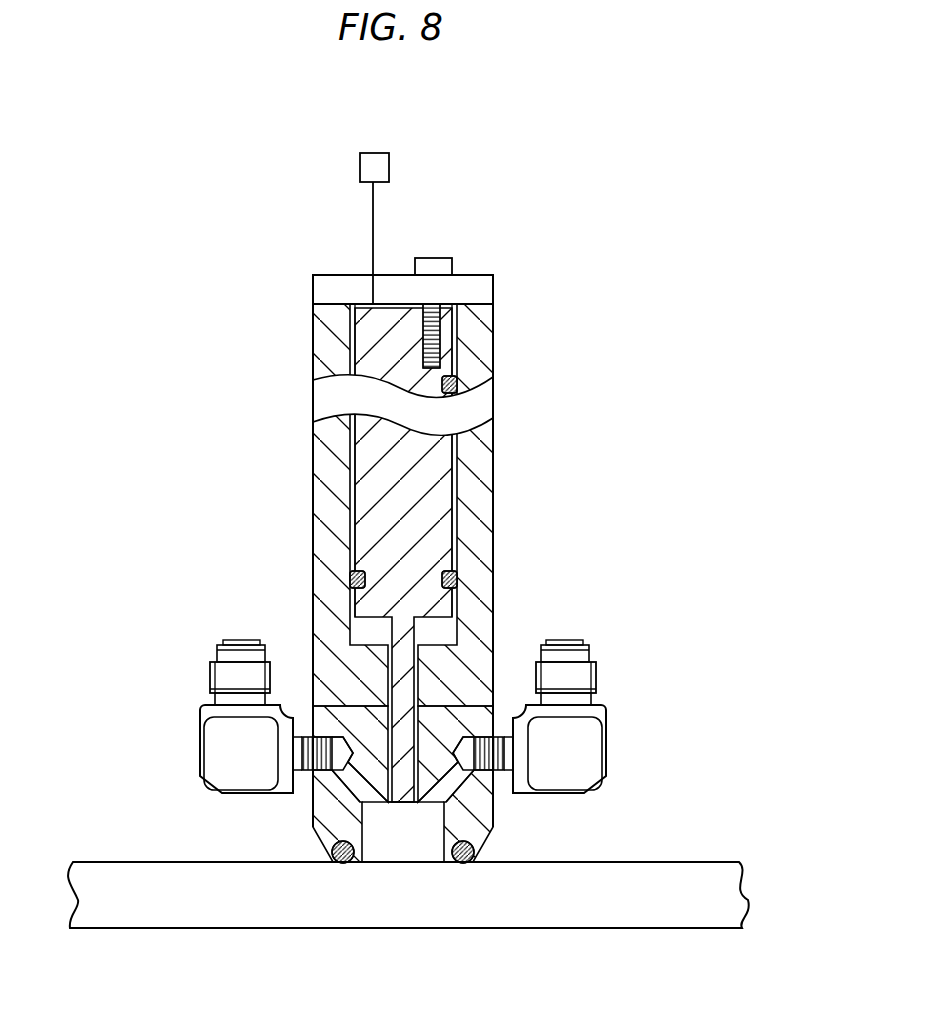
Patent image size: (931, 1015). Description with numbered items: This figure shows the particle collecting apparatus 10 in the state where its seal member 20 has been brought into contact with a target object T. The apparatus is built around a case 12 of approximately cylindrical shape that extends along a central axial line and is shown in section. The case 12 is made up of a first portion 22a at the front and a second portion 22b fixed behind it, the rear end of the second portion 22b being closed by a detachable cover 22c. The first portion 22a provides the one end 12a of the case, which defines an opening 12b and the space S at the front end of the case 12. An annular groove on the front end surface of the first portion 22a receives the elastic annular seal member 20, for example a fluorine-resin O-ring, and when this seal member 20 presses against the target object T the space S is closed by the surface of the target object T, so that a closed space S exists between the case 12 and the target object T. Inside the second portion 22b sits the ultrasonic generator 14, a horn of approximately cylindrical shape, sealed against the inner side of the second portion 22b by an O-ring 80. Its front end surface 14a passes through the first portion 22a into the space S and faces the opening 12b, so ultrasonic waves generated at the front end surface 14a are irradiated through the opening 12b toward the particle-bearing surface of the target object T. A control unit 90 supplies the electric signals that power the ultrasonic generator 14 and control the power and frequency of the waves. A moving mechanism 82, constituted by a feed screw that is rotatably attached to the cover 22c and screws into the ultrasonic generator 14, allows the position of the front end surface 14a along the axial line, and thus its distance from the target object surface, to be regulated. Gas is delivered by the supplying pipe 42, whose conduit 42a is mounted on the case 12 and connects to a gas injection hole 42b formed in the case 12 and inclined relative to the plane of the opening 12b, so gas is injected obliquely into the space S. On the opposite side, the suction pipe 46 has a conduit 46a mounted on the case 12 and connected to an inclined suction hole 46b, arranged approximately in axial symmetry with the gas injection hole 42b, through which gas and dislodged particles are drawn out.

The particle collecting apparatus 10 is at (579, 200).
The case 12 is at (507, 466).
The one end 12a is at (448, 864).
The opening 12b is at (422, 864).
The ultrasonic generator 14 is at (445, 512).
The front end surface 14a is at (398, 806).
The seal member 20 is at (331, 856).
The first portion 22a is at (313, 822).
The second portion 22b is at (313, 688).
The cover 22c is at (340, 275).
The supplying pipe 42 is at (121, 717).
The conduit 42a is at (200, 738).
The gas injection hole 42b is at (352, 792).
The suction pipe 46 is at (686, 703).
The conduit 46a is at (605, 718).
The suction hole 46b is at (454, 790).
The O-ring 80 is at (457, 384).
The moving mechanism 82 is at (433, 268).
The control unit 90 is at (377, 152).
The space S is at (373, 833).
The target object T is at (651, 930).